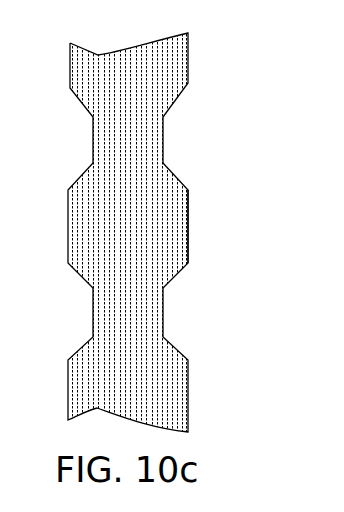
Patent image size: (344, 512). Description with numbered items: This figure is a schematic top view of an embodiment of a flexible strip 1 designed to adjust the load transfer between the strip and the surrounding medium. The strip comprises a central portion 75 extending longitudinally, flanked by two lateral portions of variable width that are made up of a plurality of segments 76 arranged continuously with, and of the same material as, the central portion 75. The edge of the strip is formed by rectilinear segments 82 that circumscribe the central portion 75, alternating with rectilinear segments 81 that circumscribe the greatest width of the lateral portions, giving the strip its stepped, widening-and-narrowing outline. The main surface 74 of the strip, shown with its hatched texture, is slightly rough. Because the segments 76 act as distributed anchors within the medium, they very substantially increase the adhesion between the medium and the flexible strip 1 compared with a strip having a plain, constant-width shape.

The corrugated profile element 1 is at (75, 158).
The main surface 74 is at (88, 380).
The central portion 75 is at (135, 108).
The segments 76 is at (170, 193).
The rectilinear segments 81 is at (188, 212).
The rectilinear segments 82 is at (163, 132).